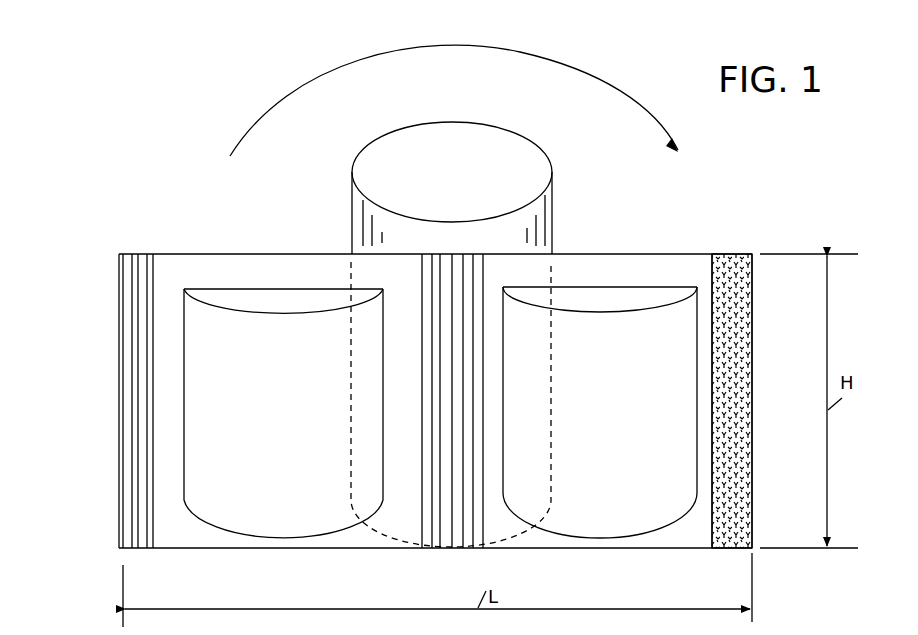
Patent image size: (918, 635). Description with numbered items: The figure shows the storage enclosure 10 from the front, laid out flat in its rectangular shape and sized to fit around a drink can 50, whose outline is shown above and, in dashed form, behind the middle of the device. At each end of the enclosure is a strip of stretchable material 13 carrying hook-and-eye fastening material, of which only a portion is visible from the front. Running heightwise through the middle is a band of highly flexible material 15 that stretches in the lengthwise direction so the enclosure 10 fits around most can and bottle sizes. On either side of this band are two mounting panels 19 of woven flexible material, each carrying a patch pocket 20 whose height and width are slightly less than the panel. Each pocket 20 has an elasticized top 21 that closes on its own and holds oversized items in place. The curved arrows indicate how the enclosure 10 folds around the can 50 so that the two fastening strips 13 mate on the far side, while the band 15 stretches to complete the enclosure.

The storage enclosure 10 is at (228, 100).
The strip of stretchable material 13 is at (110, 261).
The band of highly flexible material 15 is at (447, 540).
The mounting panels 19 is at (243, 268).
The patch pockets 20 is at (262, 527).
The elasticized top 21 is at (233, 313).
The can 50 is at (547, 153).